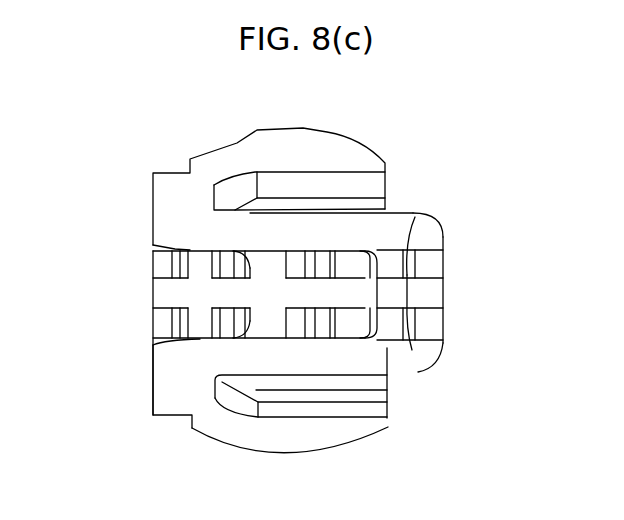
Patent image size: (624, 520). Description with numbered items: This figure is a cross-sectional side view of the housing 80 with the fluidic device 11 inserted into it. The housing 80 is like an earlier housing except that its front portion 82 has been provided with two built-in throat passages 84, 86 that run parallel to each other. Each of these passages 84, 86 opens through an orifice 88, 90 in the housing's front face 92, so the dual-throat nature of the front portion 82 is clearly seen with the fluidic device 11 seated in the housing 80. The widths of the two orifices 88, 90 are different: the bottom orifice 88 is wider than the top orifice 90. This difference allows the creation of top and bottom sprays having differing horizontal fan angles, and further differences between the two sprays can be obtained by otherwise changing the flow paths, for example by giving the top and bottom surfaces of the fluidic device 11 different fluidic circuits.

The fluidic device 11 is at (152, 323).
The housing 80 is at (327, 130).
The front portion 82 is at (387, 418).
The built-in throat passage 84 is at (412, 350).
The built-in throat passage 86 is at (415, 217).
The orifice 88 is at (442, 325).
The orifice 90 is at (438, 262).
The front face 92 is at (443, 348).